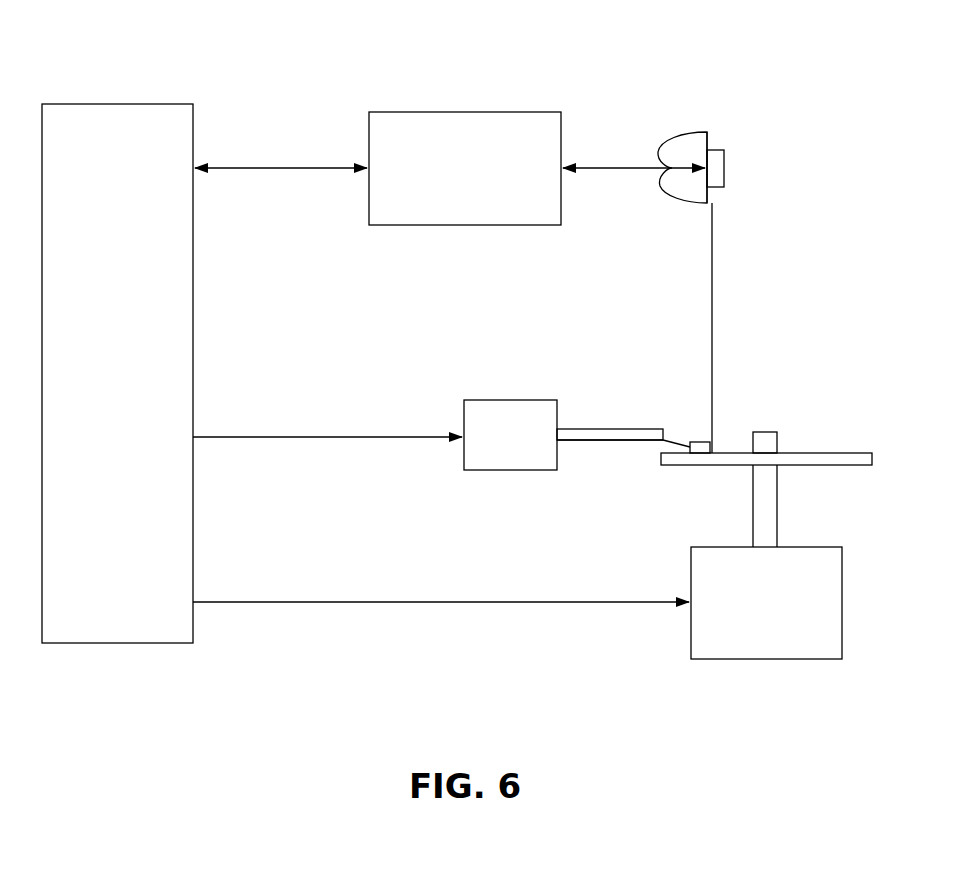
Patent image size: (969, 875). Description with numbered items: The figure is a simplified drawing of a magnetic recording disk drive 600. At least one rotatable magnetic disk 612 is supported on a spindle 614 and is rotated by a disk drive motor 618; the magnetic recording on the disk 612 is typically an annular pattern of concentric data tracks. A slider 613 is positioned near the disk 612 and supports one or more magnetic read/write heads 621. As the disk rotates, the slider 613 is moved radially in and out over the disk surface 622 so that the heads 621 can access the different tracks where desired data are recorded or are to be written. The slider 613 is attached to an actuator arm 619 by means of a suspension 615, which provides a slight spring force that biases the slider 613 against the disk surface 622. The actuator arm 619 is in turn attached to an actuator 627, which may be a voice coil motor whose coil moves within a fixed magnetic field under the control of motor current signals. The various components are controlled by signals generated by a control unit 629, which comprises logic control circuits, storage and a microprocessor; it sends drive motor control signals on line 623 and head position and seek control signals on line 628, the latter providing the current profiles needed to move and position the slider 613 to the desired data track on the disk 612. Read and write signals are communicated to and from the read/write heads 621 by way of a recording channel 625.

The disk drive 600 is at (243, 665).
The rotatable magnetic disk 612 is at (818, 452).
The slider 613 is at (697, 136).
The spindle 614 is at (773, 432).
The suspension 615 is at (688, 447).
The disk drive motor 618 is at (805, 547).
The actuator arm 619 is at (612, 442).
The magnetic read/write head 621 is at (724, 168).
The disk surface 622 is at (731, 450).
The line 623 is at (483, 604).
The recording channel 625 is at (510, 112).
The actuator 627 is at (526, 400).
The line 628 is at (305, 440).
The control unit 629 is at (173, 104).